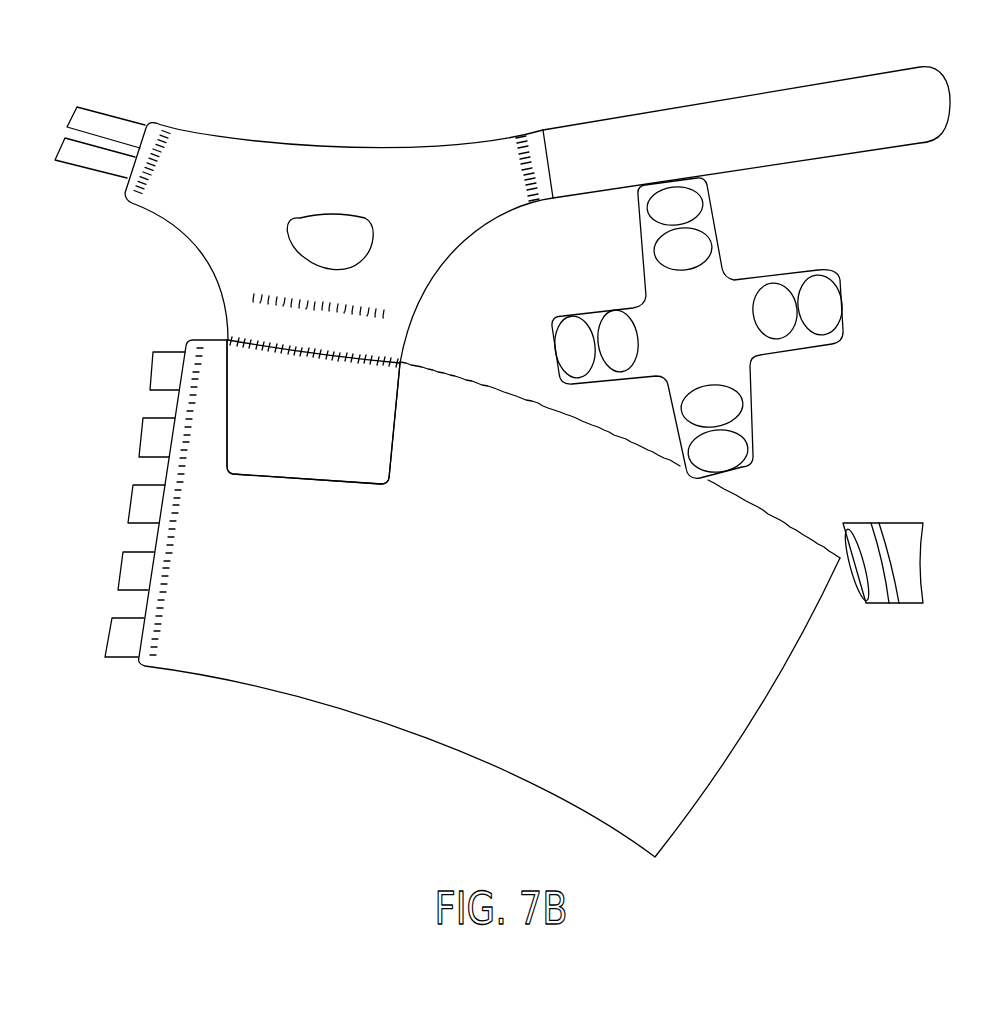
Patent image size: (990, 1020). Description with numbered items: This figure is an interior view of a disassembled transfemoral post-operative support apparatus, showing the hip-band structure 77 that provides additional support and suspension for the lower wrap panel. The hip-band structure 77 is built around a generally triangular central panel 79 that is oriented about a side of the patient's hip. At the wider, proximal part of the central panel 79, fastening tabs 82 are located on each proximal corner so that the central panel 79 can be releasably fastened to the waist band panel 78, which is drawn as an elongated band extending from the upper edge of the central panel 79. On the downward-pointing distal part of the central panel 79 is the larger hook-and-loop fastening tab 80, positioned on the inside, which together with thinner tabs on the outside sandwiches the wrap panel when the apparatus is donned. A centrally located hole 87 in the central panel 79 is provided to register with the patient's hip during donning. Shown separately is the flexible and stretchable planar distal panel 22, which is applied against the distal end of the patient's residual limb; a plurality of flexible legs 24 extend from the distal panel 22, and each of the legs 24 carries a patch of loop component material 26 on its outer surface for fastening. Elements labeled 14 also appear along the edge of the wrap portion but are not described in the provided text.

The hip-band structure 77 is at (432, 92).
The waist band panel 78 is at (782, 107).
The central panel 79 is at (237, 177).
The fastening tab 80 is at (377, 408).
The fastening tabs 82 is at (102, 132).
The hole 87 is at (342, 217).
The fastener tabs 14 is at (167, 370).
The distal panel 22 is at (693, 328).
The flexible legs 24 is at (637, 220).
The patch of loop component material 26 is at (697, 203).